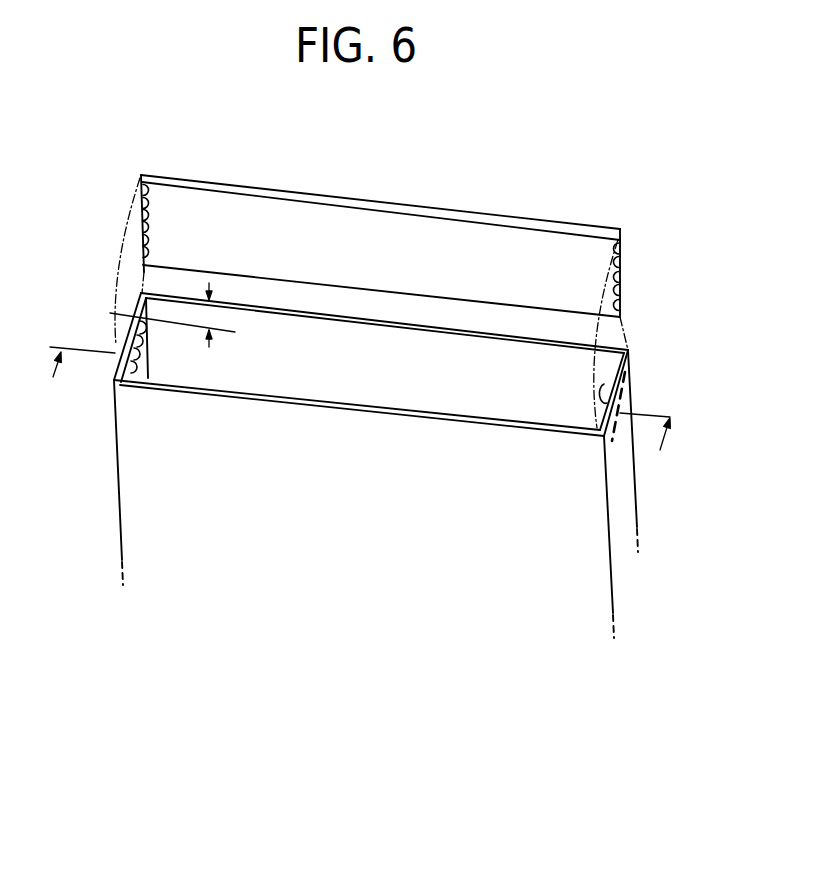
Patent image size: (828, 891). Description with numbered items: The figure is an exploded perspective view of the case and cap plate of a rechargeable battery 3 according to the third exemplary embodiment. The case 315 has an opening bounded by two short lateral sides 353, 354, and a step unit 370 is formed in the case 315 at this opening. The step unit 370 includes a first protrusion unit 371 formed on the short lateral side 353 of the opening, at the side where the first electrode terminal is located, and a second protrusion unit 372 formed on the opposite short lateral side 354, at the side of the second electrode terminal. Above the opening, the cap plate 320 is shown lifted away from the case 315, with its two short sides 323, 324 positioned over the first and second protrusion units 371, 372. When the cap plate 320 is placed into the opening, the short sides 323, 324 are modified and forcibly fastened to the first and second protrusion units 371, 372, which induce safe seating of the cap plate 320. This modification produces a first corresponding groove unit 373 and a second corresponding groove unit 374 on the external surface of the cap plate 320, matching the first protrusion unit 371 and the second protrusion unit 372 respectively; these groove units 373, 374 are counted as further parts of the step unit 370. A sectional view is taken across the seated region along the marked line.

The rechargeable battery 3 is at (380, 108).
The cap plate 320 is at (382, 220).
The short side of cap plate 323 is at (141, 176).
The short side of cap plate 324 is at (621, 258).
The case 315 is at (391, 449).
The short lateral side 353 is at (122, 342).
The short lateral side 354 is at (618, 490).
The step unit 370 is at (550, 753).
The first protrusion unit 371 is at (140, 326).
The second protrusion unit 372 is at (606, 398).
The first corresponding groove unit 373 is at (144, 226).
The second corresponding groove unit 374 is at (621, 280).